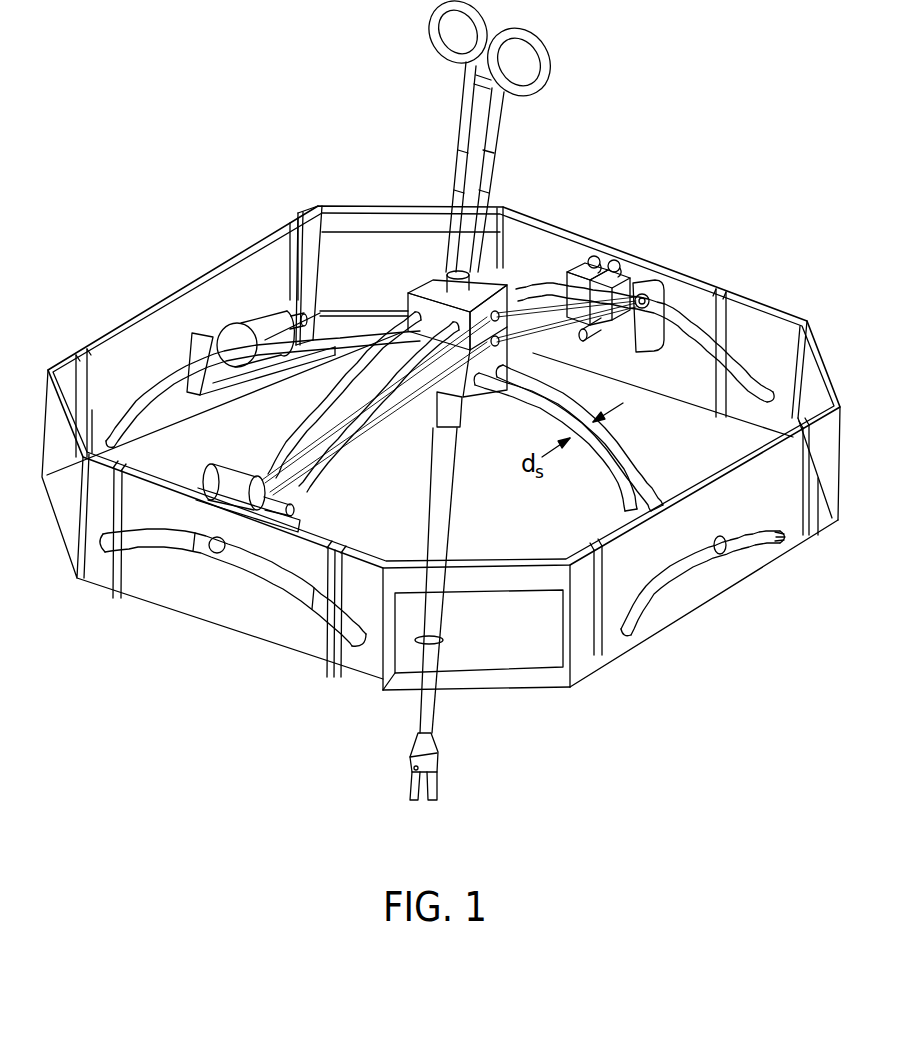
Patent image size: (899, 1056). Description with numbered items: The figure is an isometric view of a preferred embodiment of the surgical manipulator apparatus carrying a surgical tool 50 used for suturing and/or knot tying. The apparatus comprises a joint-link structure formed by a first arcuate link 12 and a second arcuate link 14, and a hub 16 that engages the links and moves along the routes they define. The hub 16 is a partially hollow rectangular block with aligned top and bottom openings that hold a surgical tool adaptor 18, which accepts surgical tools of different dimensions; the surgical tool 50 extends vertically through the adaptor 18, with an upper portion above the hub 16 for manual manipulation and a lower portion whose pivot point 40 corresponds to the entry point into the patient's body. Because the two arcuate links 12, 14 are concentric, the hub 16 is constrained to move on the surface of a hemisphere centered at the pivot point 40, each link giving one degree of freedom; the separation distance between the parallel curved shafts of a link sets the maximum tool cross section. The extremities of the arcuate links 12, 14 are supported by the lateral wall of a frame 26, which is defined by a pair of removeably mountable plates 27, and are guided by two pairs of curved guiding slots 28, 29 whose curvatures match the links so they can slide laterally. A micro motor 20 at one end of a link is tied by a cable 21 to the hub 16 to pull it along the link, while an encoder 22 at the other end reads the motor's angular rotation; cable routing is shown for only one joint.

The first arcuate link 12 is at (314, 419).
The second arcuate link 14 is at (623, 462).
The hub 16 is at (437, 290).
The surgical tool adaptor 18 is at (468, 285).
The micro motor 20 is at (582, 270).
The cable 21 is at (385, 422).
The encoder 22 is at (261, 320).
The frame 26 is at (47, 383).
The removeably mountable plates 27 is at (208, 295).
The first pair of curved guiding slots 28 is at (765, 382).
The second pair of curved guiding slots 29 is at (180, 365).
The pivot point 40 is at (446, 641).
The surgical tool 50 is at (466, 114).